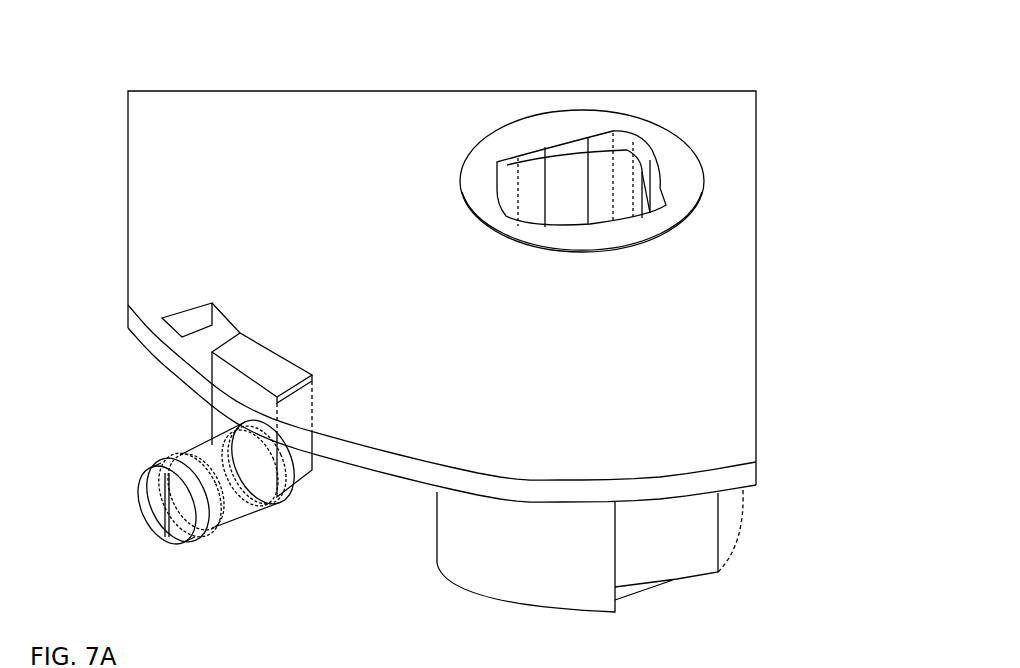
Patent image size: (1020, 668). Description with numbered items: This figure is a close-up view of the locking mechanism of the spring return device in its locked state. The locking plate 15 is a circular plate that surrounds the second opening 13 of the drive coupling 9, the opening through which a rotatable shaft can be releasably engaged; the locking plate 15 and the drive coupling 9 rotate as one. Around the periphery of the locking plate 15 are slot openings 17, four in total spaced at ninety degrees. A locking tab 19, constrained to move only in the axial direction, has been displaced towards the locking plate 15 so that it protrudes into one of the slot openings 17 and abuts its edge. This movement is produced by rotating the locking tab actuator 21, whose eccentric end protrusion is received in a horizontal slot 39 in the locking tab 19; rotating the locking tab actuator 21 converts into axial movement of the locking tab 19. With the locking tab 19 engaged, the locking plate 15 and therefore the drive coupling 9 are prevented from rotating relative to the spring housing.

The drive coupling 9 is at (592, 540).
The second opening 13 is at (585, 185).
The locking plate 15 is at (266, 195).
The slot opening 17 is at (200, 343).
The locking tab 19 is at (257, 370).
The locking tab actuator 21 is at (170, 498).
The slot 39 is at (272, 457).